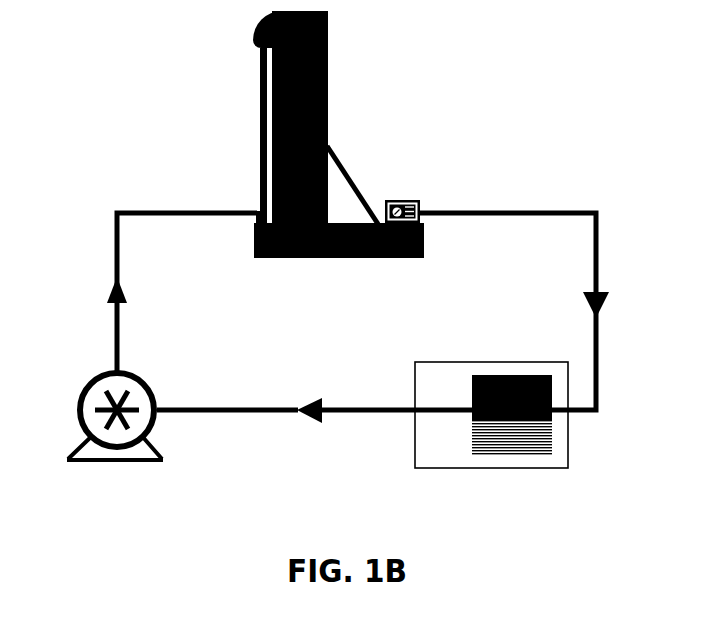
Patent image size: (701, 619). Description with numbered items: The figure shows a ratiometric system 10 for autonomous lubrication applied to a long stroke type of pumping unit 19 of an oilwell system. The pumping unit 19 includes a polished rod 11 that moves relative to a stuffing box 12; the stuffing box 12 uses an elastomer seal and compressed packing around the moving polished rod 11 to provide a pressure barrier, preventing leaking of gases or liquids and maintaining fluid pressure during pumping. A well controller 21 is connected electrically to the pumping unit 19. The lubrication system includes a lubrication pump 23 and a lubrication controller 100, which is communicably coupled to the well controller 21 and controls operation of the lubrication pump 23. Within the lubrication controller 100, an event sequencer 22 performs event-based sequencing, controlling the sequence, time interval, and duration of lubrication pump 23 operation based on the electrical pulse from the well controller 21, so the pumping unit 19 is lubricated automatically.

The ratiometric system 10 is at (358, 318).
The polished rod 11 is at (259, 148).
The stuffing box 12 is at (257, 208).
The pumping unit 19 is at (329, 143).
The well controller 21 is at (423, 206).
The event sequencer 22 is at (472, 432).
The lubrication pump 23 is at (88, 382).
The lubrication controller 100 is at (415, 446).